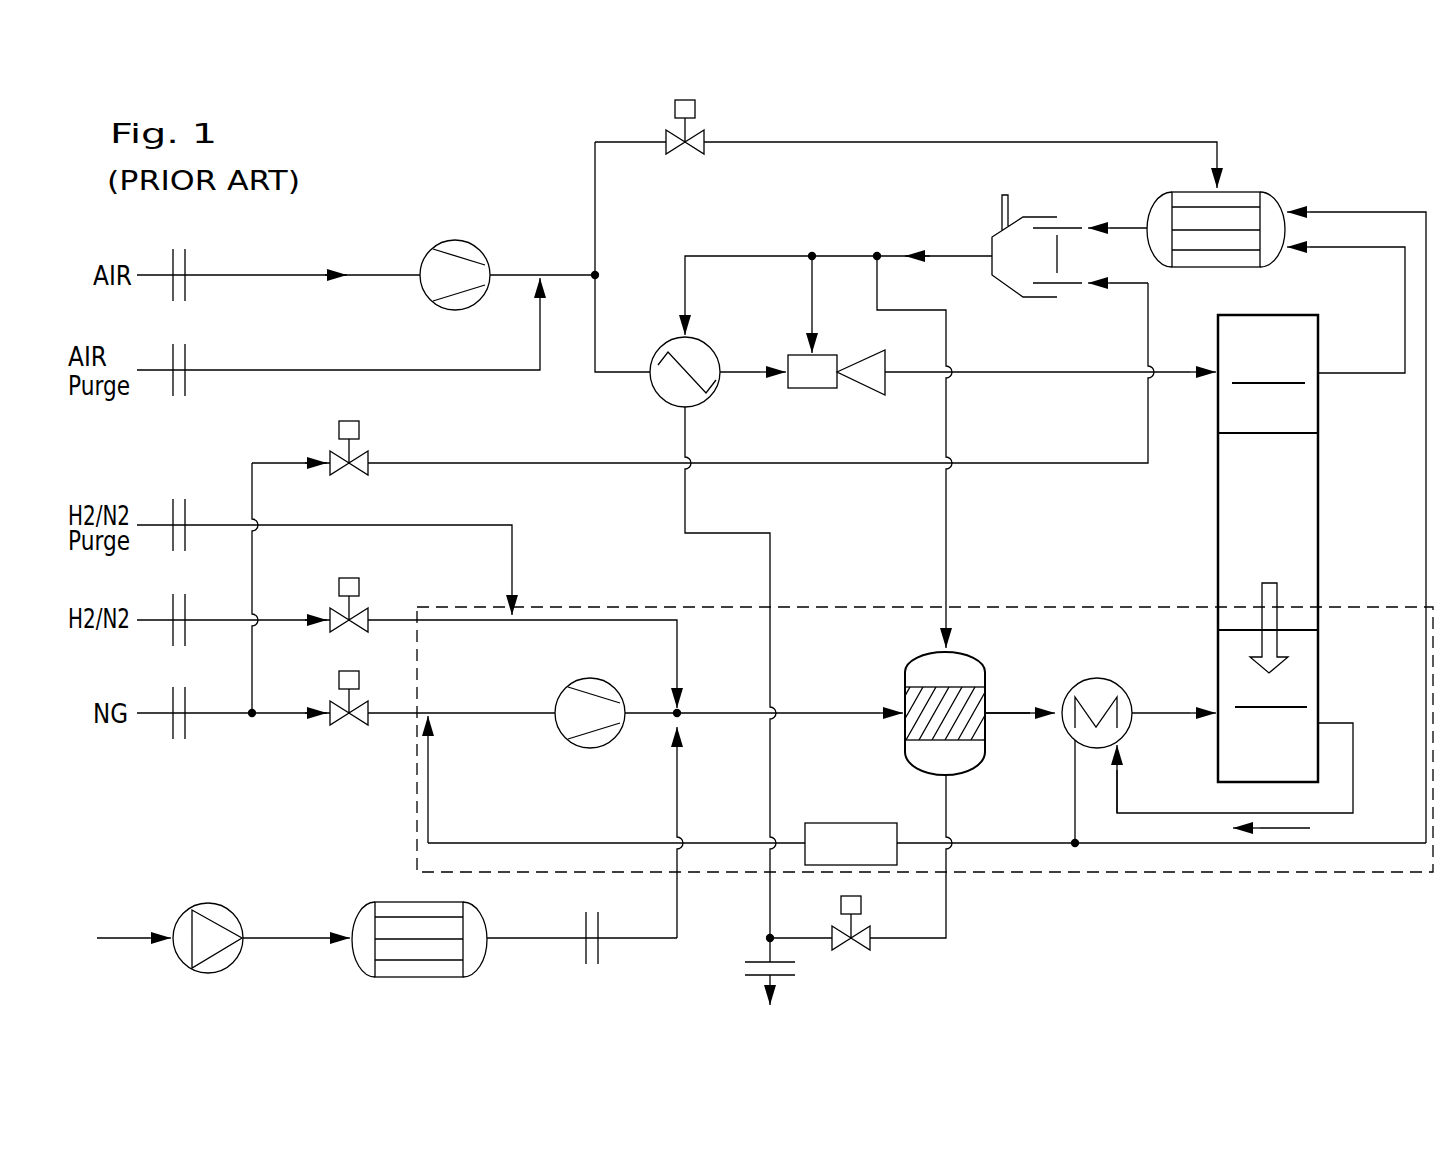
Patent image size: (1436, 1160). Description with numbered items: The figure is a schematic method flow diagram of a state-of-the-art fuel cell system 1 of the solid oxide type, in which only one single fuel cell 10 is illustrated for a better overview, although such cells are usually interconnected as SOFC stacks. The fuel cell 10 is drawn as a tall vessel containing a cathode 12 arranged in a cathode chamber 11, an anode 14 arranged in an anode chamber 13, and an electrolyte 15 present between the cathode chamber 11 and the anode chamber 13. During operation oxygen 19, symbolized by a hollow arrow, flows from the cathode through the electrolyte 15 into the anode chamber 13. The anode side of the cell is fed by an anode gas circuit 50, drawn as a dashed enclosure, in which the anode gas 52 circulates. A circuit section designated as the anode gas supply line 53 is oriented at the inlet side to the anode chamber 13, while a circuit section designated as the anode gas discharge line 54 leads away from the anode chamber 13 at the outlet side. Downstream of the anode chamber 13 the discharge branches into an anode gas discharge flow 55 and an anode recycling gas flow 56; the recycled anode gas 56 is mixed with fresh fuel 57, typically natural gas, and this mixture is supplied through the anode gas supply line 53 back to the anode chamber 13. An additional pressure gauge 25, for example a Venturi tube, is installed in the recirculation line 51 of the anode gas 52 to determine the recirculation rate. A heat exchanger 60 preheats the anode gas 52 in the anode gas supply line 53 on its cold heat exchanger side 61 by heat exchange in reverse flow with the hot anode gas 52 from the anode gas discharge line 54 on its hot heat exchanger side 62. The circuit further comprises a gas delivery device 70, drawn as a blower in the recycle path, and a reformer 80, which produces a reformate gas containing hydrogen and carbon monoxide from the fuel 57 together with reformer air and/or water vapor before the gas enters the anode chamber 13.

The fuel cell system 1 is at (540, 192).
The fuel cell 10 is at (1167, 575).
The cathode chamber 11 is at (1263, 392).
The cathode 12 is at (1268, 382).
The anode chamber 13 is at (1302, 660).
The anode 14 is at (1285, 705).
The electrolyte 15 is at (1282, 485).
The oxygen 19 is at (1268, 598).
The pressure gauge 25 is at (832, 822).
The anode gas circuit 50 is at (415, 785).
The recirculation line 51 is at (507, 842).
The anode gas 52 is at (1278, 830).
The anode gas supply line 53 is at (1165, 712).
The anode gas discharge line 54 is at (1353, 768).
The anode gas discharge flow 55 is at (1228, 845).
The anode recycling gas flow 56 is at (430, 763).
The fresh fuel 57 is at (283, 717).
The heat exchanger 60 is at (1070, 723).
The cold heat exchanger side 61 is at (1022, 710).
The hot heat exchanger side 62 is at (1117, 797).
The gas delivery device 70 is at (590, 713).
The reformer 80 is at (938, 708).